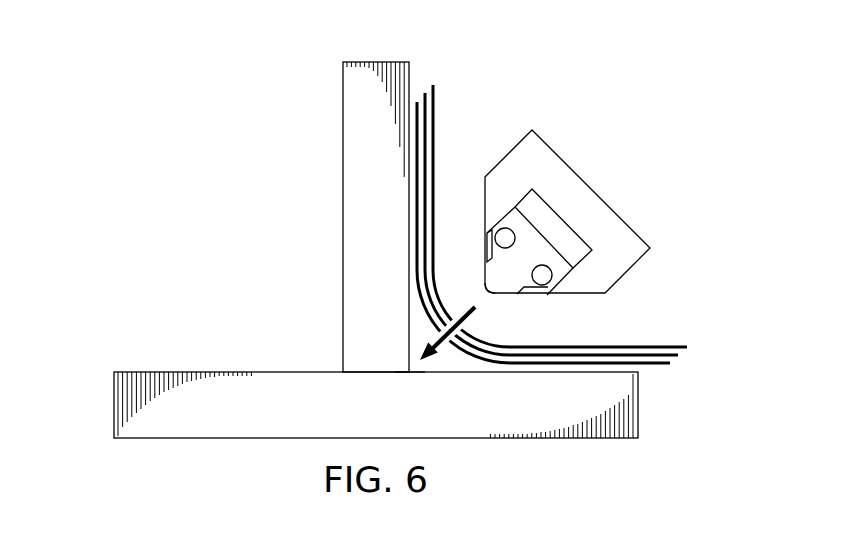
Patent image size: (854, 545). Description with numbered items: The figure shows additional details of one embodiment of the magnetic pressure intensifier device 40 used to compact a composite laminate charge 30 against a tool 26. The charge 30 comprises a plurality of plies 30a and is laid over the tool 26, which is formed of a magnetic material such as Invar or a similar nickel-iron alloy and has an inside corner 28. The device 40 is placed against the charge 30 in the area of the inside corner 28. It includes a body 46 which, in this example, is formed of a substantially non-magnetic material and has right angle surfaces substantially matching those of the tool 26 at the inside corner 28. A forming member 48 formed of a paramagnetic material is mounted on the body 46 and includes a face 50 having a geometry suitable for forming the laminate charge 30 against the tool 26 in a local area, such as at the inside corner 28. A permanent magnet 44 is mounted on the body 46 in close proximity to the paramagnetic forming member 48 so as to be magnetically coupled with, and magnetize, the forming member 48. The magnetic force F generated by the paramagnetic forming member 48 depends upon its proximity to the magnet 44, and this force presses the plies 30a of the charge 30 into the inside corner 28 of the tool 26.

The tool 26 is at (343, 215).
The inside corner 28 is at (386, 341).
The composite laminate charge 30 is at (590, 234).
The plies 30a is at (435, 138).
The magnetic pressure intensifier device 40 is at (584, 212).
The permanent magnet 44 is at (558, 234).
The body 46 is at (630, 238).
The forming member 48 is at (528, 241).
The face 50 is at (505, 313).
The magnetic force F is at (460, 300).